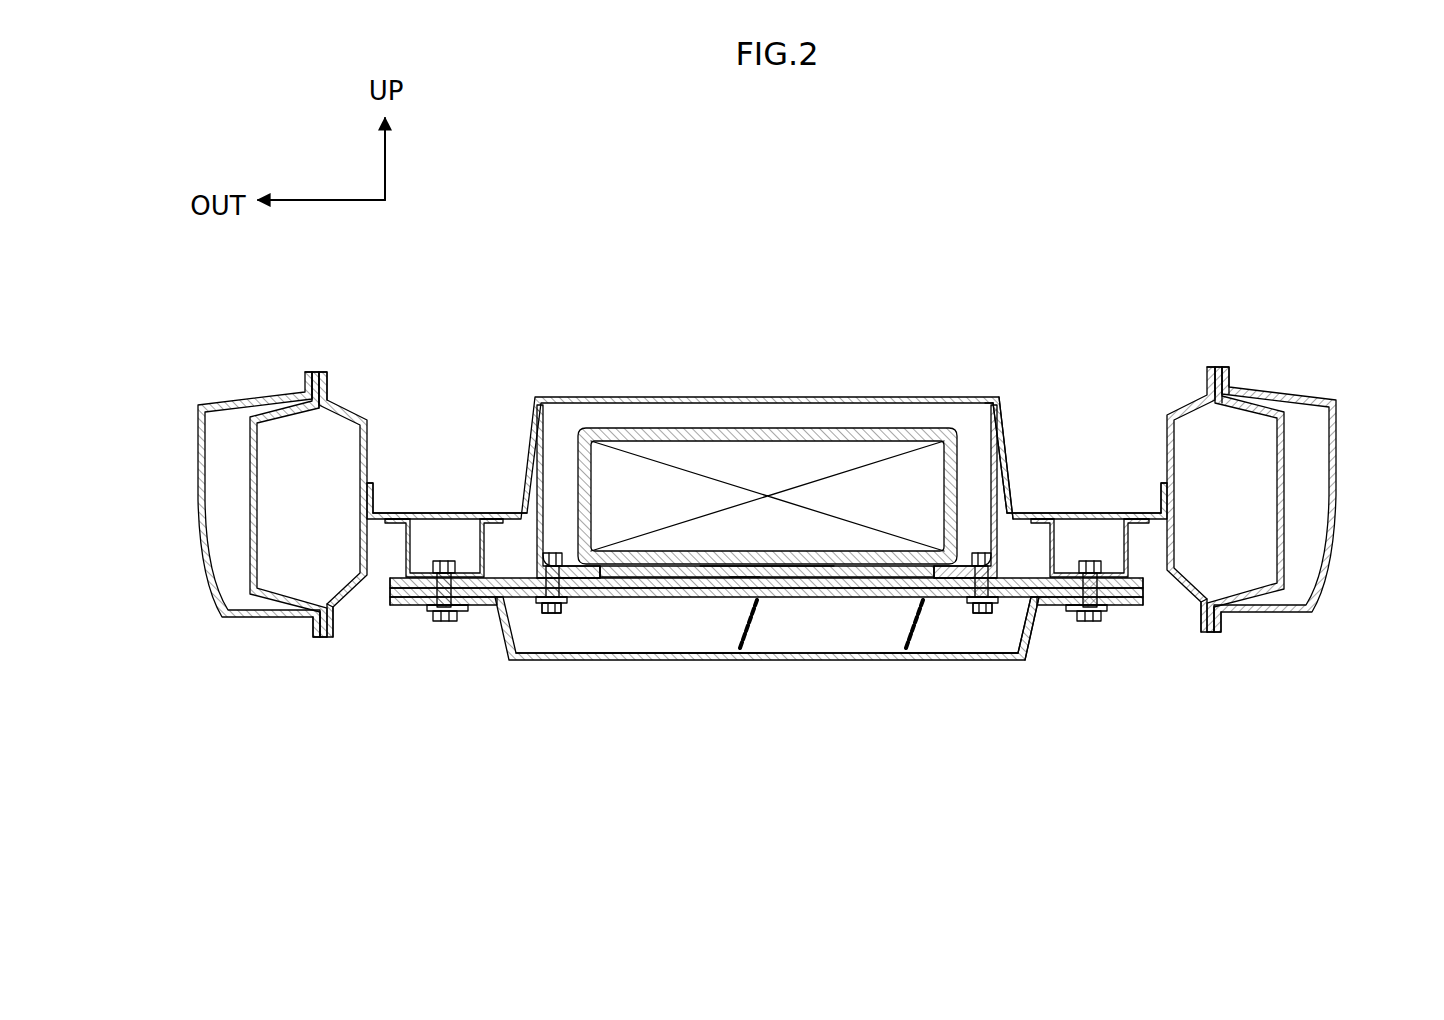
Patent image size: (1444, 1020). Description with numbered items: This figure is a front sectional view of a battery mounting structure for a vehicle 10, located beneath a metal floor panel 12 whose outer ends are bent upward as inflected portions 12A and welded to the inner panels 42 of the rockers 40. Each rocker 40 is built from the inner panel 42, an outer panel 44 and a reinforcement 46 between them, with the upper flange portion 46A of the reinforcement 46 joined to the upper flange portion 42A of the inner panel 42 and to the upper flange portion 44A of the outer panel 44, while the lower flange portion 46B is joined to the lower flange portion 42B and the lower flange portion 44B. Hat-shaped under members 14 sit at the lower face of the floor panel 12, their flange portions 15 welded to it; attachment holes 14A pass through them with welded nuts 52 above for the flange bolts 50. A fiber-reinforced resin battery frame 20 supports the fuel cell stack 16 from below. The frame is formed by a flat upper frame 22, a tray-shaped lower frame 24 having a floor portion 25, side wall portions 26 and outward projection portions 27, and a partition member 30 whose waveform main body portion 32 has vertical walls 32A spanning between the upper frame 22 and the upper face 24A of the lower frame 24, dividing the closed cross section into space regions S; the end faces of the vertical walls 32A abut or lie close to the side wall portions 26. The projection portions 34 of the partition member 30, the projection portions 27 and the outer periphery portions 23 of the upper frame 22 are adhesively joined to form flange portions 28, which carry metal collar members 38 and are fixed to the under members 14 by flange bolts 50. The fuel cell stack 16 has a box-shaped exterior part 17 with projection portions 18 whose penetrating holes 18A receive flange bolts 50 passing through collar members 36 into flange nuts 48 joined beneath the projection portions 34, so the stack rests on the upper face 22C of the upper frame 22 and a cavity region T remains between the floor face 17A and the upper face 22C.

The battery mounting structure for a vehicle 10 is at (767, 707).
The floor panel 12 is at (727, 395).
The inflected portion 12A is at (370, 483).
The under member 14 is at (470, 531).
The attachment hole 14A is at (445, 513).
The flange portion 15 is at (392, 520).
The fuel cell stack 16 is at (860, 422).
The exterior part 17 is at (955, 428).
The floor face 17A is at (890, 568).
The projection portion 18 is at (523, 505).
The penetrating hole 18A is at (560, 556).
The battery frame 20 is at (524, 680).
The upper frame 22 is at (630, 565).
The upper face 22C is at (783, 572).
The outer periphery portion 23 is at (390, 583).
The lower frame 24 is at (810, 622).
The upper face 24A is at (787, 642).
The floor portion 25 is at (920, 662).
The side wall portion 26 is at (505, 648).
The projection portion 27 is at (390, 602).
The flange portion 28 is at (767, 676).
The partition member 30 is at (1035, 622).
The main body portion 32 is at (630, 641).
The vertical wall 32A is at (658, 633).
The projection portion 34 is at (390, 594).
The collar member 36 is at (565, 598).
The collar member 38 is at (461, 606).
The rocker 40 is at (764, 481).
The inner panel 42 is at (341, 407).
The upper flange portion 42A is at (321, 372).
The lower flange portion 42B is at (330, 638).
The outer panel 44 is at (196, 472).
The upper flange portion 44A is at (305, 372).
The lower flange portion 44B is at (316, 637).
The reinforcement 46 is at (253, 478).
The upper flange portion 46A is at (313, 372).
The lower flange portion 46B is at (323, 638).
The flange nut 48 is at (552, 614).
The flange bolt 50 is at (551, 553).
The welded nut 52 is at (443, 561).
The space region S is at (815, 668).
The cavity region T is at (740, 565).